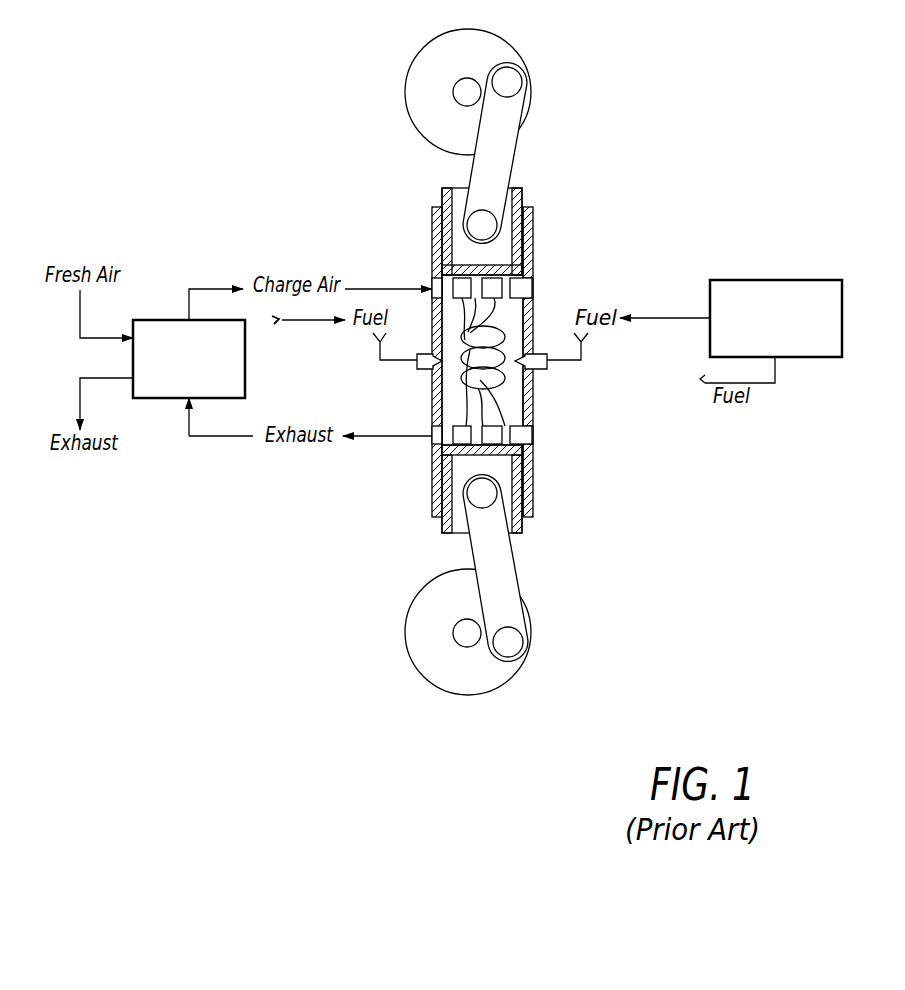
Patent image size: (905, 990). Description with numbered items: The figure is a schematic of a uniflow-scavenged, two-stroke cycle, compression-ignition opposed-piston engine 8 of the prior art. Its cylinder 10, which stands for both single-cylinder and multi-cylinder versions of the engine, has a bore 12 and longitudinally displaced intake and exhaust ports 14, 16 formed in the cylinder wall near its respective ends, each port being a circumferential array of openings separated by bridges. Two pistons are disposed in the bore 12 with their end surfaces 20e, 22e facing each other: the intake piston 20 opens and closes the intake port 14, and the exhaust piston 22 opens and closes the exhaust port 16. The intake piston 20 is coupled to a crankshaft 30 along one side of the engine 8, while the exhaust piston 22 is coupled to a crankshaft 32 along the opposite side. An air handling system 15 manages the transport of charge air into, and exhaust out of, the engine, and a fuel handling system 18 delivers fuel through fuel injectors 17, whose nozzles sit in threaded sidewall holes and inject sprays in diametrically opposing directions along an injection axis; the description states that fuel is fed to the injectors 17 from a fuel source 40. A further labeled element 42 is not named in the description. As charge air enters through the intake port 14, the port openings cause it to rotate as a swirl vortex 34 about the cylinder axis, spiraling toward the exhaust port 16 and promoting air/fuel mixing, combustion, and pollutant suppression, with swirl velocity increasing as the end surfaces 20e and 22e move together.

The opposed-piston engine 8 is at (291, 152).
The cylinder 10 is at (432, 500).
The bore 12 is at (442, 397).
The intake port 14 is at (533, 288).
The air handling system 15 is at (155, 398).
The exhaust port 16 is at (533, 436).
The fuel injectors 17 is at (428, 354).
The fuel handling system 18 is at (782, 280).
The intake piston 20 is at (442, 215).
The end surface of intake piston 20e is at (447, 276).
The exhaust piston 22 is at (468, 488).
The end surface of exhaust piston 22e is at (455, 444).
The crankshaft 30 is at (411, 65).
The crankshaft 32 is at (432, 683).
The swirl vortex 34 is at (506, 330).
The fuel source 40 is at (513, 160).
The wrist pin 42 is at (482, 225).